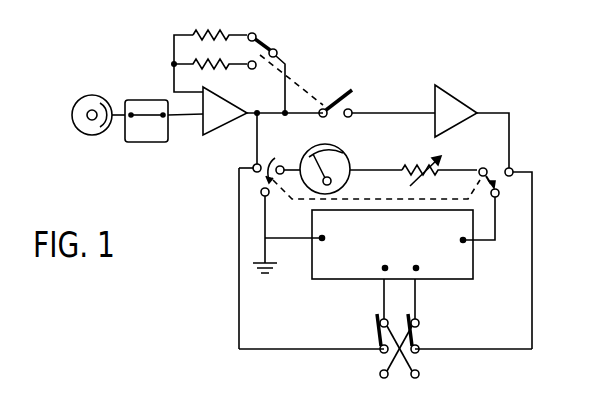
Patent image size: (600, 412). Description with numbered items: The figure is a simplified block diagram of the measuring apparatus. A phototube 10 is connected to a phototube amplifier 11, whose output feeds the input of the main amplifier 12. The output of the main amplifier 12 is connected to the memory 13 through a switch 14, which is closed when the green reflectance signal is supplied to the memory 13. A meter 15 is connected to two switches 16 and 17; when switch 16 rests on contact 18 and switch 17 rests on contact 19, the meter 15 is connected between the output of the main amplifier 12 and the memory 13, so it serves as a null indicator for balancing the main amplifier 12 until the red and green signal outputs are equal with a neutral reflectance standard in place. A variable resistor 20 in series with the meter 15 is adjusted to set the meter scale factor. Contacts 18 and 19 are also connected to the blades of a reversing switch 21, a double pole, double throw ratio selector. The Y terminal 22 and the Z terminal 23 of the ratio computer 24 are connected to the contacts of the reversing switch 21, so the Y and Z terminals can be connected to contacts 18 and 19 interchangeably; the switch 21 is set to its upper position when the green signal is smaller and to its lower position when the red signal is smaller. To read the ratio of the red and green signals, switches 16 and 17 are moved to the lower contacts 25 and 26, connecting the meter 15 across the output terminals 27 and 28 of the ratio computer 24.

The phototube 10 is at (66, 124).
The phototube amplifier 11 is at (146, 100).
The main amplifier 12 is at (215, 134).
The memory 13 is at (456, 99).
The switch 14 is at (353, 101).
The meter 15 is at (350, 157).
The switch 16 is at (352, 123).
The switch 17 is at (496, 177).
The contact 18 is at (255, 160).
The contact 19 is at (504, 167).
The variable resistor 20 is at (421, 161).
The reversing switch 21 is at (420, 335).
The Y terminal 22 is at (383, 270).
The Z terminal 23 is at (418, 270).
The ratio computer 24 is at (333, 274).
The lower contact 25 is at (261, 194).
The lower contact 26 is at (497, 210).
The output terminal 27 is at (320, 242).
The output terminal 28 is at (470, 246).